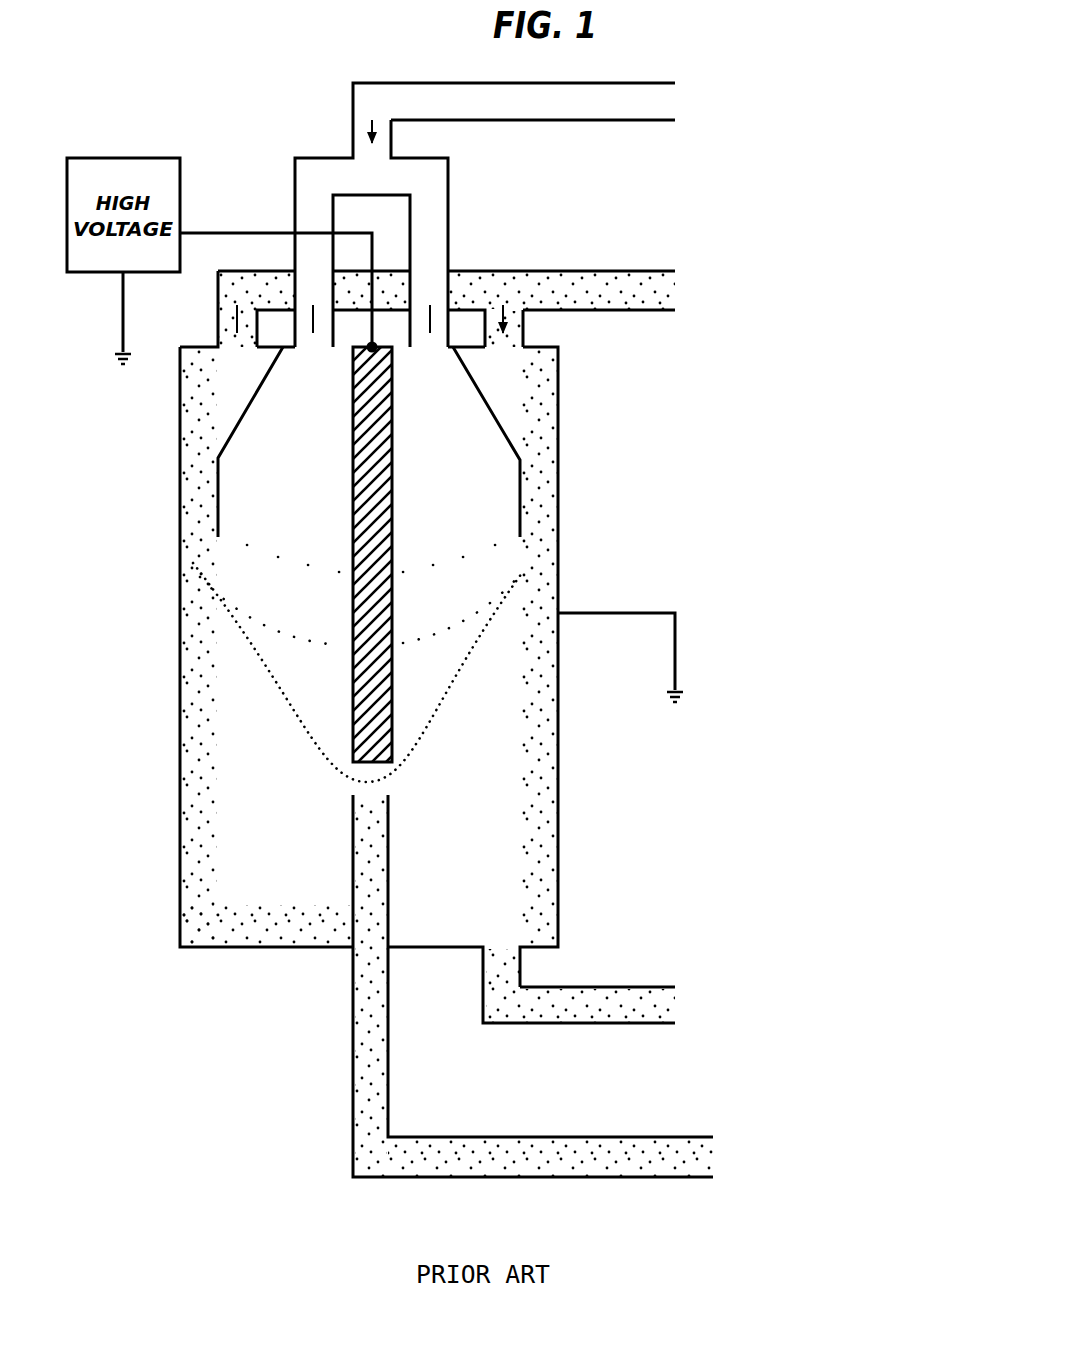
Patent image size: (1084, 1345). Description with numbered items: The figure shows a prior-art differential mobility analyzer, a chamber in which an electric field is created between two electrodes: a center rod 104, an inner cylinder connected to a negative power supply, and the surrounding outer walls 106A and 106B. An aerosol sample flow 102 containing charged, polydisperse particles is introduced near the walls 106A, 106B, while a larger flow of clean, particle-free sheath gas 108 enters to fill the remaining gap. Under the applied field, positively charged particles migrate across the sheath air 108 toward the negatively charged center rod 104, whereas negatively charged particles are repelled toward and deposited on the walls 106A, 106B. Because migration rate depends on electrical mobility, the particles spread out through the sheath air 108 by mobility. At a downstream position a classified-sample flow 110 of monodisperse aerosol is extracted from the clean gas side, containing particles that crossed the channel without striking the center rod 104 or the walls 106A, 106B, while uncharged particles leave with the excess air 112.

The aerosol sample flow 102 is at (685, 293).
The center rod 104 is at (353, 444).
The wall 106A is at (560, 393).
The wall 106B is at (180, 398).
The clean particle-free gas 108 is at (697, 103).
The classified-sample flow 110 is at (713, 1157).
The excess air 112 is at (675, 1003).